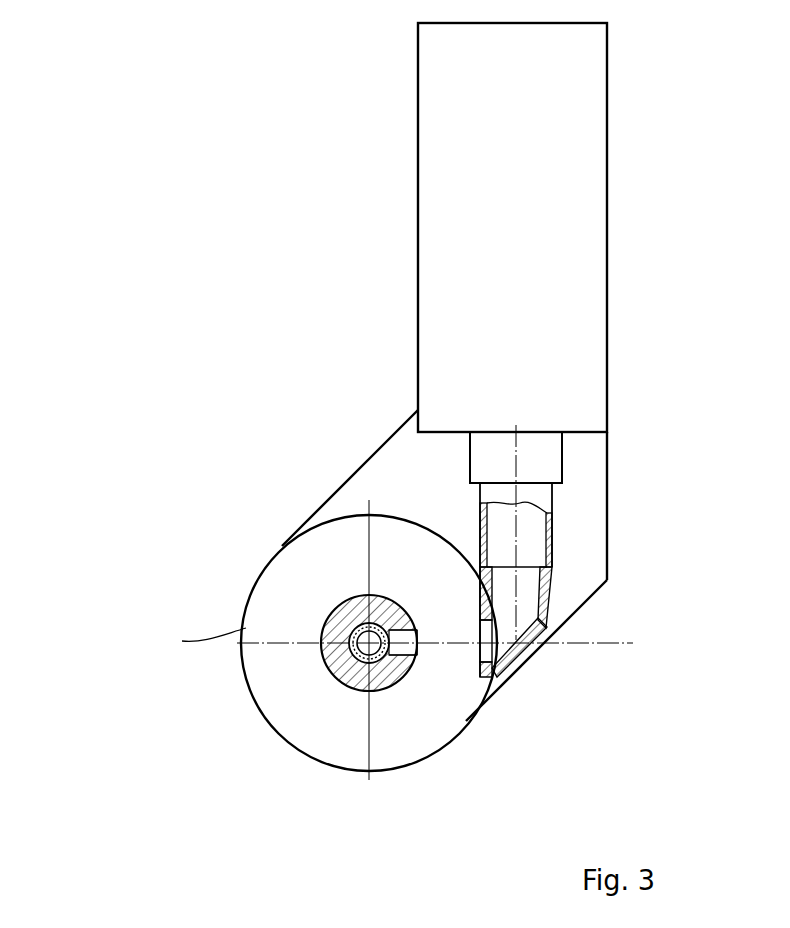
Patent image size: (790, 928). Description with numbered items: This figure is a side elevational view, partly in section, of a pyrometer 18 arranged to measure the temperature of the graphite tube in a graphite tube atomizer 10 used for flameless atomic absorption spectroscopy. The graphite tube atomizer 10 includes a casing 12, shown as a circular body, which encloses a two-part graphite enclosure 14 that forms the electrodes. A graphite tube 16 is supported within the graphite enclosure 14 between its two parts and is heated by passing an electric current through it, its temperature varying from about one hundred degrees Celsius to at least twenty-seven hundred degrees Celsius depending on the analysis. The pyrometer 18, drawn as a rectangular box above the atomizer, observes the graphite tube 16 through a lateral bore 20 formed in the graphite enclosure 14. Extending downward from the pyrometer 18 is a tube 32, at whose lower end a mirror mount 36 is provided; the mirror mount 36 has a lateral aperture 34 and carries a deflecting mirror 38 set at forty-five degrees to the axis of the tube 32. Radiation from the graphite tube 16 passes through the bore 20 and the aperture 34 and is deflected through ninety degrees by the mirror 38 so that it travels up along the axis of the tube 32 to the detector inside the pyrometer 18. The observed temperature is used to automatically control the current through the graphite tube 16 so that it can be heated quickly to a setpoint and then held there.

The graphite tube atomizer 10 is at (272, 560).
The casing 12 is at (338, 742).
The graphite enclosure 14 is at (348, 670).
The graphite tube 16 is at (403, 650).
The pyrometer 18 is at (418, 221).
The lateral bore 20 is at (417, 655).
The tube 32 is at (554, 552).
The lateral aperture 34 is at (487, 647).
The mirror mount 36 is at (545, 583).
The deflecting mirror 38 is at (527, 641).